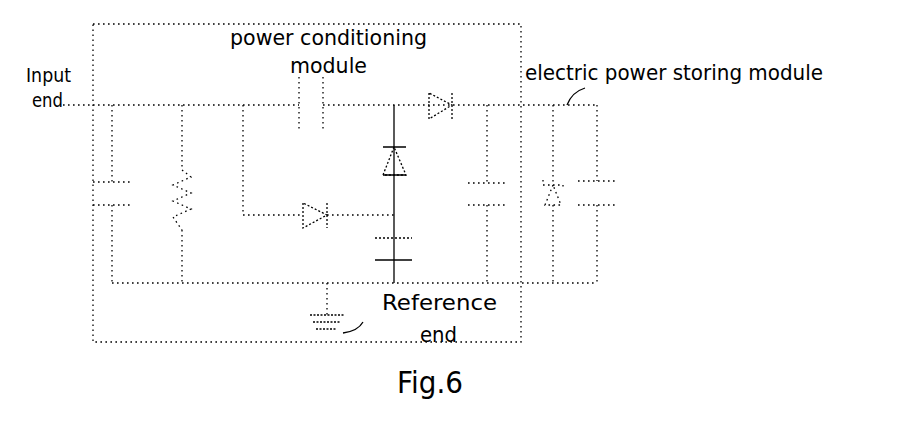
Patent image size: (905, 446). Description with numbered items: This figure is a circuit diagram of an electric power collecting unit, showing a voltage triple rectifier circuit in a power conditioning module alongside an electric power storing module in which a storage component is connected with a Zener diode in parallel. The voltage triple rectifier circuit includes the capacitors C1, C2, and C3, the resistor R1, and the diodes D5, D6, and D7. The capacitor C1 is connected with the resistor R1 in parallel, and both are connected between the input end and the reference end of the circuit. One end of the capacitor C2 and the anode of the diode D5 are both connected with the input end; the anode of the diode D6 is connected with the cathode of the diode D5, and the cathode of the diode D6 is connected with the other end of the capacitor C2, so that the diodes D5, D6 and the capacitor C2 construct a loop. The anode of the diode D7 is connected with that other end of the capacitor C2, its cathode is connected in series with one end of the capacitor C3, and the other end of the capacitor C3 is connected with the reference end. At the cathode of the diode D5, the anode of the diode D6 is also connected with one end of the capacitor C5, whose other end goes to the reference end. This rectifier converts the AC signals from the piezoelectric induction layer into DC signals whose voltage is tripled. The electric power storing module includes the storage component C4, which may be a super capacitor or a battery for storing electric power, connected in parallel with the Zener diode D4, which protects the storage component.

The capacitor C1 is at (128, 193).
The resistor R1 is at (199, 200).
The capacitor C2 is at (315, 116).
The diode D7 is at (444, 93).
The diode D6 is at (412, 194).
The diode D5 is at (348, 229).
The capacitor C5 is at (414, 249).
The capacitor C3 is at (479, 194).
The Zener diode D4 is at (567, 203).
The storage component C4 is at (614, 193).